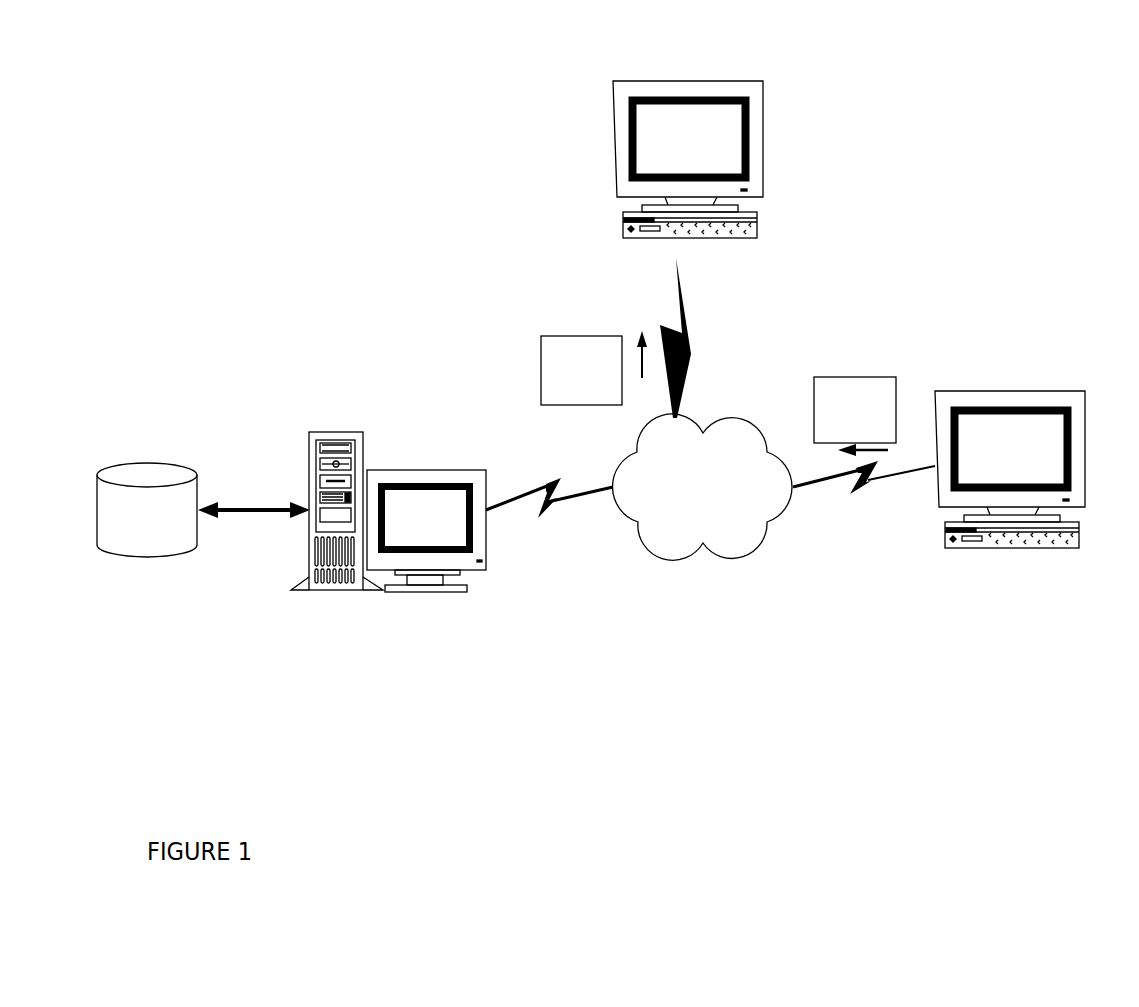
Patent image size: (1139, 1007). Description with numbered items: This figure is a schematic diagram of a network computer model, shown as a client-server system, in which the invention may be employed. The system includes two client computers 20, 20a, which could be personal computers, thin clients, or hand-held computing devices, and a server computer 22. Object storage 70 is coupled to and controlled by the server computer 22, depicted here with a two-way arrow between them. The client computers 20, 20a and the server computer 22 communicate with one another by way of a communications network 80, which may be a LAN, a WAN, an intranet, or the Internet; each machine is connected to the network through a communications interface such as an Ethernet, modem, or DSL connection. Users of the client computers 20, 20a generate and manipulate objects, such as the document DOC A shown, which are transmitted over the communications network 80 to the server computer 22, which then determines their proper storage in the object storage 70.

The client computer 20 is at (1010, 391).
The client computer 20a is at (690, 81).
The server computer 22 is at (328, 432).
The object storage 70 is at (145, 463).
The communications network 80 is at (726, 418).